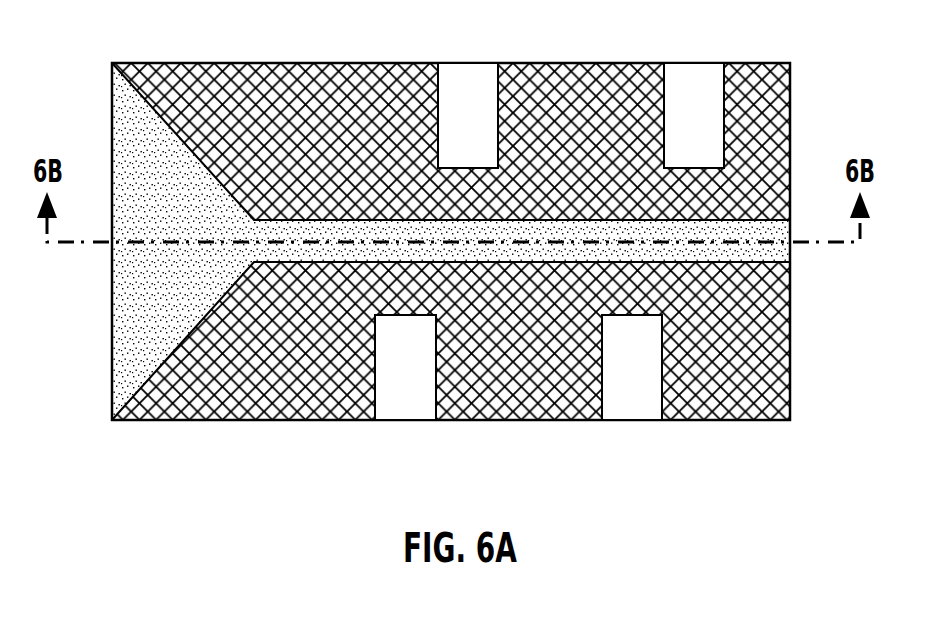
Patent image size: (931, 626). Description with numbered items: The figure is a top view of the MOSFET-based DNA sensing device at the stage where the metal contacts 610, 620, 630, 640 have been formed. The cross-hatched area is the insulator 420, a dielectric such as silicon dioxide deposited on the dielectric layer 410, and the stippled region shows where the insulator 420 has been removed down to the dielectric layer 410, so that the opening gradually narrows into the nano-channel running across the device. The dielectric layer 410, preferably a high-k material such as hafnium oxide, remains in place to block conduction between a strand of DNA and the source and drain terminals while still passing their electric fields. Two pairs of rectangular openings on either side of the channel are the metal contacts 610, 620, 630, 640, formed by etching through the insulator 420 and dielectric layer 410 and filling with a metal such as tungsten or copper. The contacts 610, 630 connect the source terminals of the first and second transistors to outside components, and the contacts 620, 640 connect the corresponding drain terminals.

The dielectric layer 410 is at (182, 211).
The insulator 420 is at (301, 132).
The metal contact 610 is at (409, 408).
The metal contact 620 is at (465, 75).
The metal contact 630 is at (632, 408).
The metal contact 640 is at (687, 75).